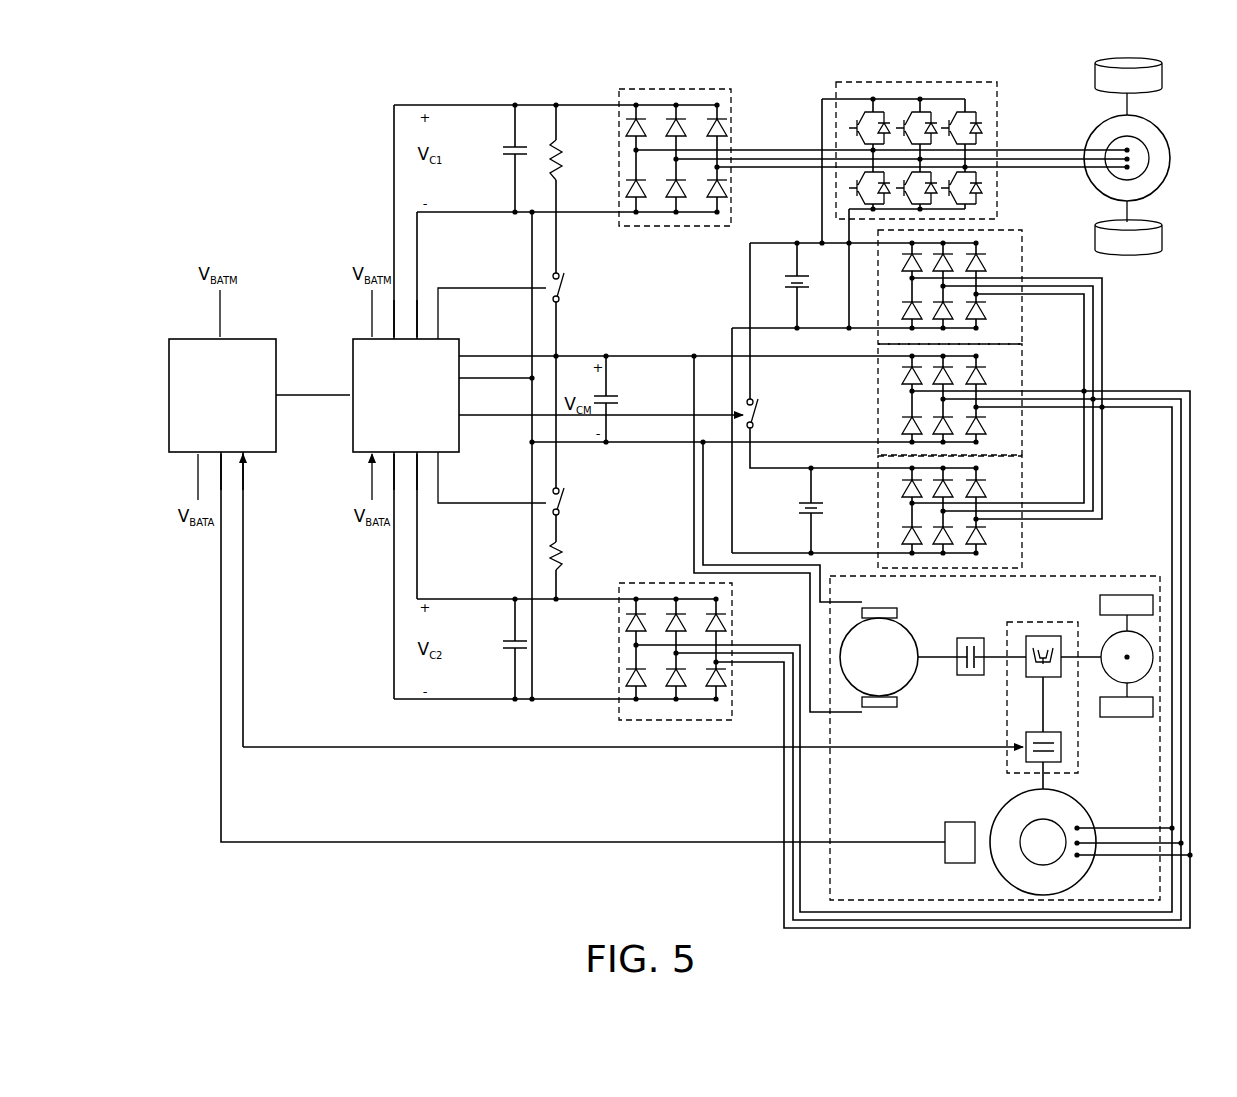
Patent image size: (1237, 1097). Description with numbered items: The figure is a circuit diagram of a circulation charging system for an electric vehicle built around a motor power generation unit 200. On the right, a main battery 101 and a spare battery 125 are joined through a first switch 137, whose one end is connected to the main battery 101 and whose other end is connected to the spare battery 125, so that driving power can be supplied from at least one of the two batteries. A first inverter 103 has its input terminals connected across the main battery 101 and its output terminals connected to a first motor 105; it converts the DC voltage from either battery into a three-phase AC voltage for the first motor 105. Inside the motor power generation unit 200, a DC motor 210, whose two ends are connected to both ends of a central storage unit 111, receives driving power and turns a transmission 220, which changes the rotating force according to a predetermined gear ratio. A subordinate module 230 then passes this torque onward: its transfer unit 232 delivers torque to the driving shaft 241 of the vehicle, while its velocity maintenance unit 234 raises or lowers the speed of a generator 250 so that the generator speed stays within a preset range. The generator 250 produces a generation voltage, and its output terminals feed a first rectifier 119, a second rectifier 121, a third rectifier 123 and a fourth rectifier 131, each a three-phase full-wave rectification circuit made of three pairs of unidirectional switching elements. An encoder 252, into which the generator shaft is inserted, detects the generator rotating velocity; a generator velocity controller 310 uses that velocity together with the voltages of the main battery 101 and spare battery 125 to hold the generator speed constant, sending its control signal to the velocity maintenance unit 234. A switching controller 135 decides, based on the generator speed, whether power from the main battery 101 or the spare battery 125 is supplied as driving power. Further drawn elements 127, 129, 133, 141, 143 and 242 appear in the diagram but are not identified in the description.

The main battery 101 is at (785, 282).
The first inverter 103 is at (954, 84).
The first motor 105 is at (1172, 160).
The central storage unit 111 is at (617, 392).
The first rectifier 119 is at (1024, 262).
The second rectifier 121 is at (1024, 378).
The third rectifier 123 is at (1024, 488).
The spare battery 125 is at (800, 508).
The fourth rectifier 127 is at (688, 90).
The first capacitor 129 is at (527, 143).
The fourth rectifier 131 is at (734, 617).
The second capacitor 133 is at (512, 655).
The switching controller 135 is at (352, 372).
The first switch 137 is at (760, 412).
The first switch 141 is at (566, 289).
The second switch 143 is at (566, 500).
The motor power generation unit 200 is at (978, 903).
The DC motor 210 is at (912, 690).
The transmission 220 is at (968, 636).
The subordinate module 230 is at (1080, 770).
The transfer unit 232 is at (1043, 634).
The velocity maintenance unit 234 is at (1022, 770).
The driving shaft 241 is at (1153, 652).
The wheel 242 is at (1127, 594).
The generator 250 is at (1096, 868).
The encoder 252 is at (945, 860).
The generator velocity controller 310 is at (278, 452).